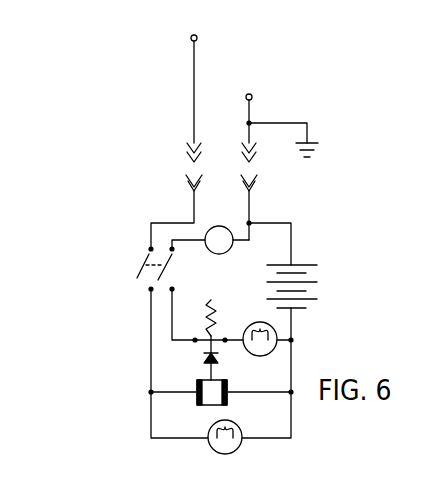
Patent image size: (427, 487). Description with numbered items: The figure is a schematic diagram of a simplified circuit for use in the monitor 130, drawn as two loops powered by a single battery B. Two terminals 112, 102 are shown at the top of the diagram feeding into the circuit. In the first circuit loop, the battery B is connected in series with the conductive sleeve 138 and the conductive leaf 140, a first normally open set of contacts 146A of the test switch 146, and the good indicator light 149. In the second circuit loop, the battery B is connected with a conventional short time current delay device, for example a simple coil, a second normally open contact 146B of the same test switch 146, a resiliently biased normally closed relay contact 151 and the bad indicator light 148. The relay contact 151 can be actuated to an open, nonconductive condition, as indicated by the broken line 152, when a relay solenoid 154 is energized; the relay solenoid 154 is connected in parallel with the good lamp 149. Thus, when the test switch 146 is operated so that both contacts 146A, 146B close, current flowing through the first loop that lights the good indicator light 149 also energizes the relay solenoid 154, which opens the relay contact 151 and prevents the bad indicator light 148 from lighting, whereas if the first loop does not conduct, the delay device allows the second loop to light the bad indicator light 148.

The terminal 102 is at (252, 94).
The terminal 112 is at (191, 36).
The monitor 130 is at (158, 138).
The conductive sleeve 138 is at (189, 183).
The conductive leaf 140 is at (254, 184).
The test switch 146 is at (147, 259).
The first normally open set of contacts 146A is at (139, 280).
The second normally open contact 146B is at (143, 255).
The bad indicator light 148 is at (279, 352).
The good indicator light 149 is at (207, 448).
The relay contact 151 is at (216, 332).
The broken line 152 is at (208, 370).
The relay solenoid 154 is at (209, 401).
The battery B is at (316, 264).